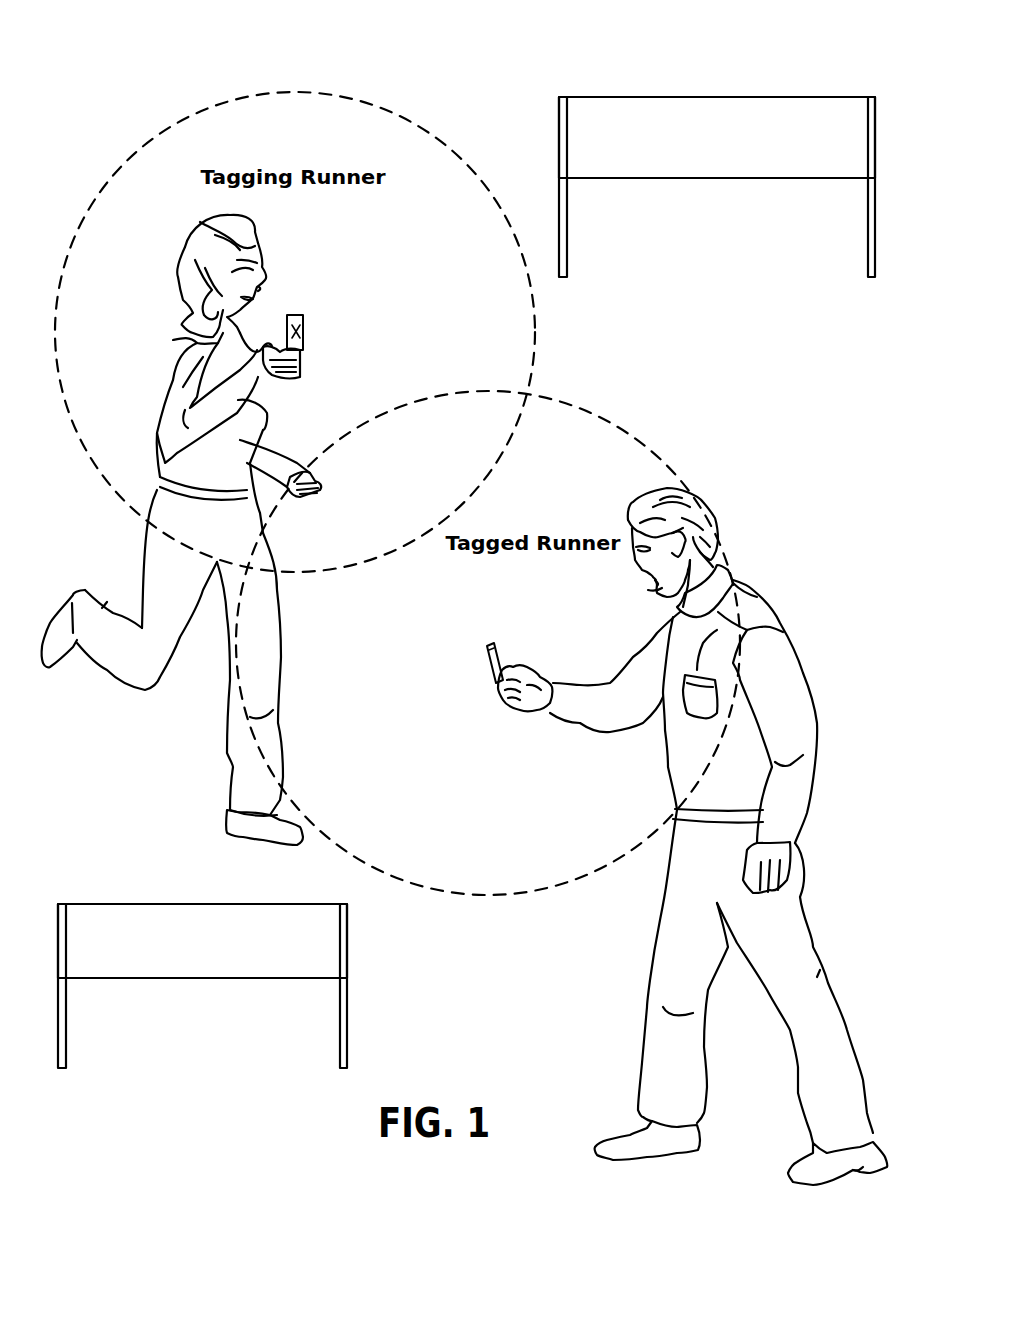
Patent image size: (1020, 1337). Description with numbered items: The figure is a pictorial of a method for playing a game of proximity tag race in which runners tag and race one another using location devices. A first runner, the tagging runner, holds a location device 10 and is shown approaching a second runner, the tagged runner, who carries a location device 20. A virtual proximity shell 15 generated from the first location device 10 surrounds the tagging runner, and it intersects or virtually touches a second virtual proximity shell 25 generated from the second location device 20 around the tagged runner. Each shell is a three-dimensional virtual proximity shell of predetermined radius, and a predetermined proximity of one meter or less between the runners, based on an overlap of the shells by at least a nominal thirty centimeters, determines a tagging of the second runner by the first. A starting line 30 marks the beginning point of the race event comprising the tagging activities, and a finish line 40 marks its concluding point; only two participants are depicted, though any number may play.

The location device 10 is at (288, 315).
The virtual proximity shell 15 is at (135, 150).
The location device 20 is at (488, 645).
The second virtual proximity shell 25 is at (642, 440).
The starting line 30 is at (127, 904).
The finish line 40 is at (713, 98).